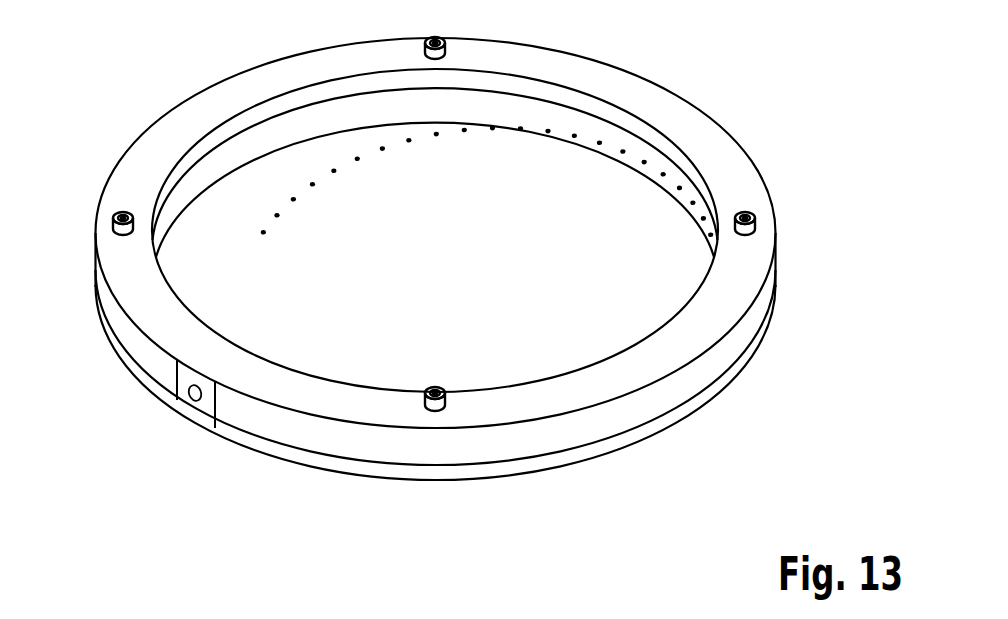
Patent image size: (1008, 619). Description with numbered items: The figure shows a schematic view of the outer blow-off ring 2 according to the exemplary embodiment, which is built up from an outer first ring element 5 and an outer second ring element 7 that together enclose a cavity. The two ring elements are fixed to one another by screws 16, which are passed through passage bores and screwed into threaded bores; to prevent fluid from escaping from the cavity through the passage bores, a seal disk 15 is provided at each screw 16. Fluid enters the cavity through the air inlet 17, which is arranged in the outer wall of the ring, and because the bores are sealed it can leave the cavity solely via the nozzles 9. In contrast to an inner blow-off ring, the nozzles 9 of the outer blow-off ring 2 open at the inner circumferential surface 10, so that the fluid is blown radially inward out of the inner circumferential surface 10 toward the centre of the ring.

The outer blow-off ring 2 is at (127, 126).
The outer first ring element 5 is at (685, 408).
The outer second ring element 7 is at (712, 327).
The nozzles 9 is at (220, 153).
The inner circumferential surface 10 is at (369, 109).
The seal disk 15 is at (745, 233).
The screws 16 is at (753, 212).
The air inlet 17 is at (198, 397).